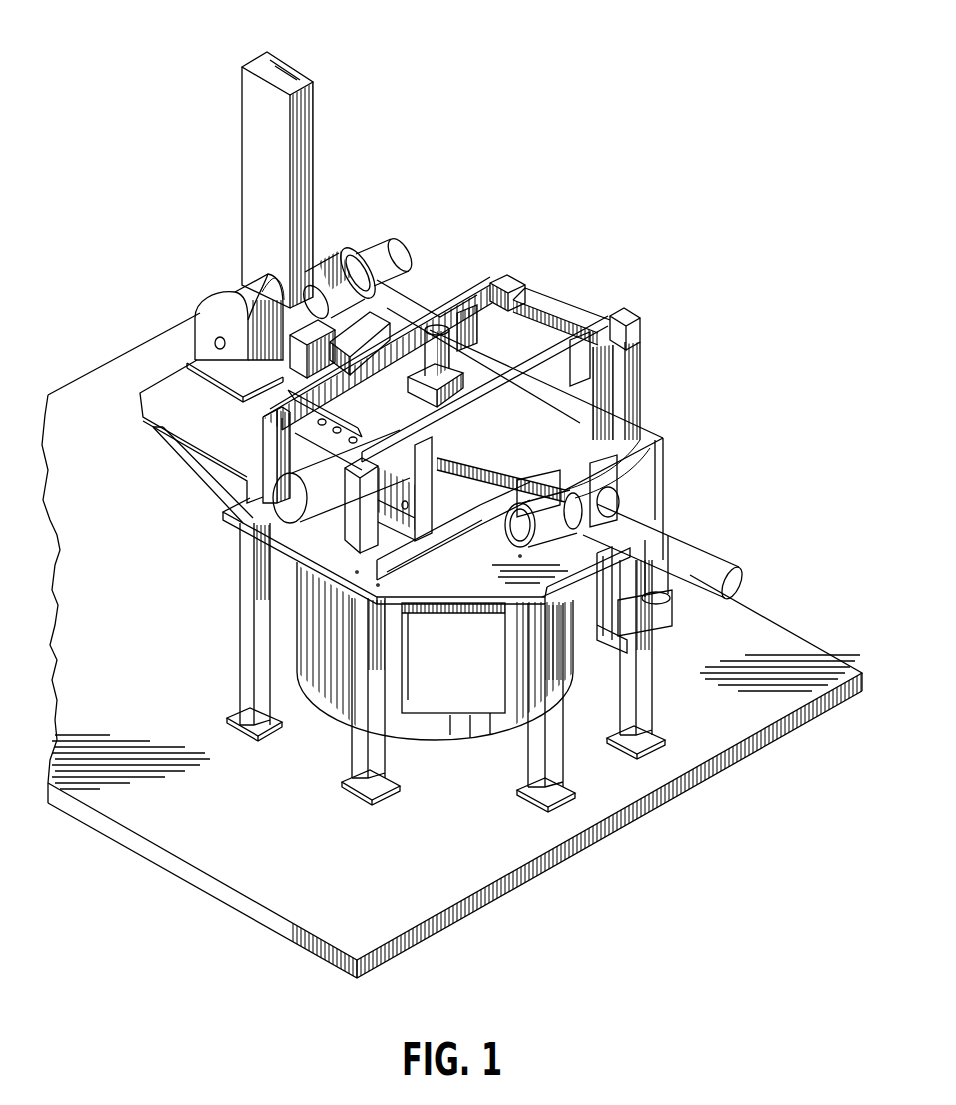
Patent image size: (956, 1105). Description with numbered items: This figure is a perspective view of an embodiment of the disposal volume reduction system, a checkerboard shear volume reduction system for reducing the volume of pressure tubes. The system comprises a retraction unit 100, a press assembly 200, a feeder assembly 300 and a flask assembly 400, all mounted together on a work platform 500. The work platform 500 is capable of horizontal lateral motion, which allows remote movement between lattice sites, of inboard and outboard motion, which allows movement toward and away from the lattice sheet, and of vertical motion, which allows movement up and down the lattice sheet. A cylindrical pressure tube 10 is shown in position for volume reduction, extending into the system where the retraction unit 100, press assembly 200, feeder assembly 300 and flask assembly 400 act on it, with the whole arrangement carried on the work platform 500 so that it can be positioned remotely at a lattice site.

The cylindrical pressure tube 10 is at (685, 557).
The retraction unit 100 is at (257, 258).
The press assembly 200 is at (492, 362).
The feeder assembly 300 is at (555, 420).
The flask assembly 400 is at (320, 638).
The work platform 500 is at (346, 855).